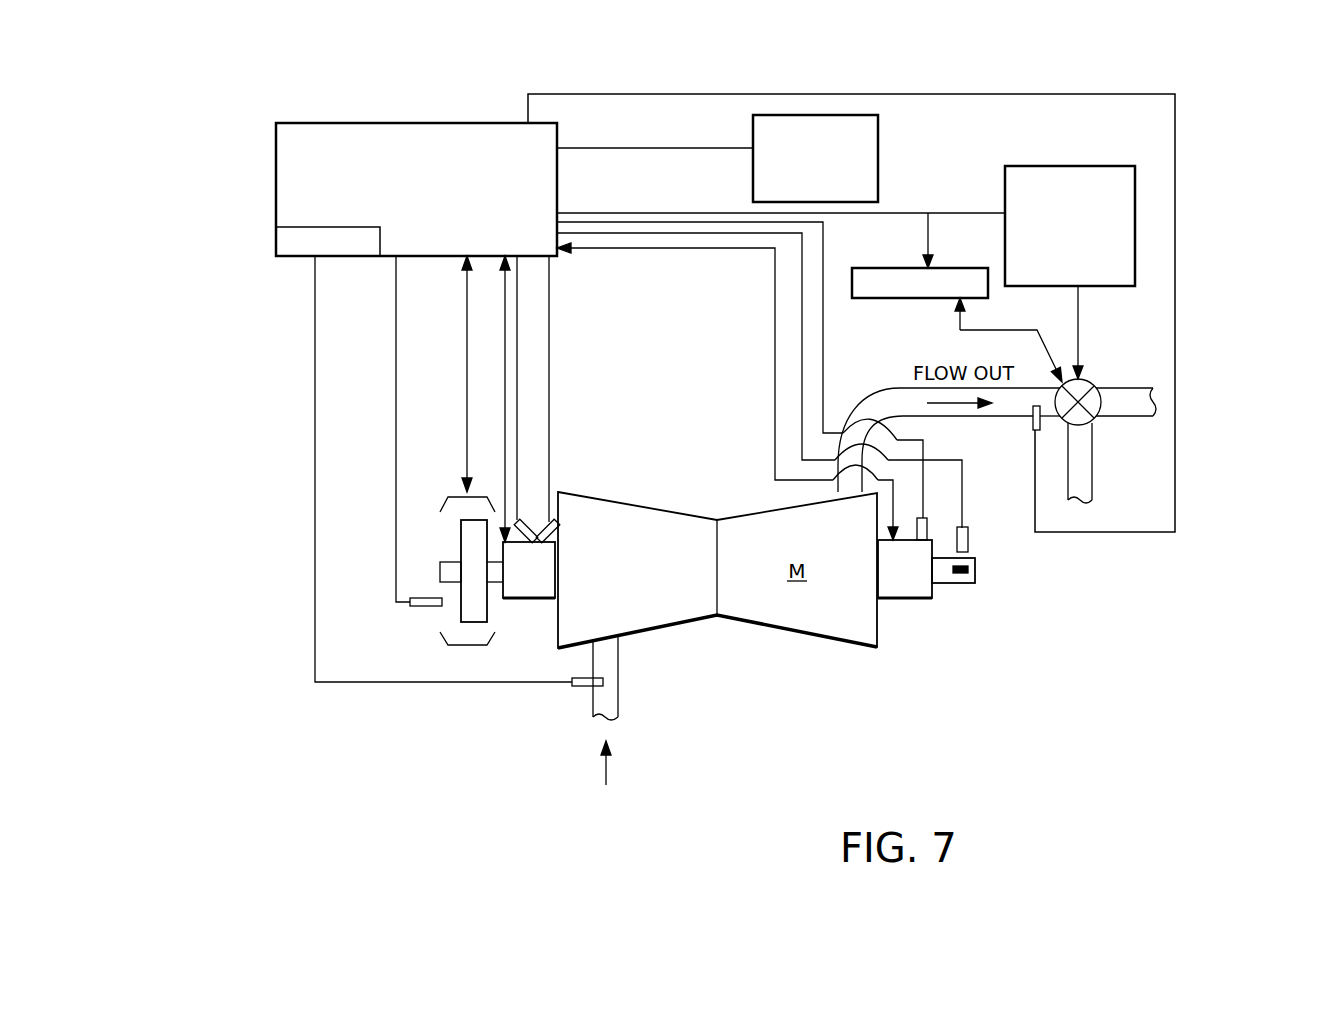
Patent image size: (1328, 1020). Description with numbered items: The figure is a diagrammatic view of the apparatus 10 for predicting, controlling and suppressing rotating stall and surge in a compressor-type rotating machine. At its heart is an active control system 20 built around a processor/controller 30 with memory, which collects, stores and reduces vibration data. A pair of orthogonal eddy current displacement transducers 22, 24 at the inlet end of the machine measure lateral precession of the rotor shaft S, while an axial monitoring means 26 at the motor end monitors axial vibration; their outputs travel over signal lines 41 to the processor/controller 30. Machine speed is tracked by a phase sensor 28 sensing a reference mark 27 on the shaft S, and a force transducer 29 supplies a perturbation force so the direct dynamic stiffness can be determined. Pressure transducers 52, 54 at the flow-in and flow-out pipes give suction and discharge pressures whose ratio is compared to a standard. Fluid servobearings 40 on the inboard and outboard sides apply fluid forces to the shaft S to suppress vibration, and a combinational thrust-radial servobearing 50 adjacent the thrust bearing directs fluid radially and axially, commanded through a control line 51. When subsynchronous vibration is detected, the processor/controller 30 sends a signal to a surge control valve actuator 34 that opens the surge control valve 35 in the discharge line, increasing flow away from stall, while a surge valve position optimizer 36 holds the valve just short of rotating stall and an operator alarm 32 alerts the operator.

The apparatus 10 is at (1204, 149).
The active control system 20 is at (371, 189).
The eddy current displacement transducer 22 is at (545, 540).
The eddy current displacement transducer 24 is at (555, 535).
The axial monitoring means 26 is at (412, 608).
The reference mark 27 is at (970, 578).
The phase sensor 28 is at (970, 550).
The force transducer 29 is at (928, 526).
The processor/controller 30 is at (411, 237).
The operator alarm 32 is at (805, 196).
The surge control valve actuator 34 is at (1060, 275).
The surge control valve 35 is at (1100, 392).
The surge valve position optimizer 36 is at (938, 268).
The fluid servobearing 40 is at (518, 581).
The signal lines 41 is at (775, 300).
The combinational thrust-radial servobearing 50 is at (440, 508).
The motor control line 51 is at (466, 401).
The pressure transducer 52 is at (578, 690).
The pressure transducer 54 is at (1040, 432).
The rotor shaft S is at (945, 585).